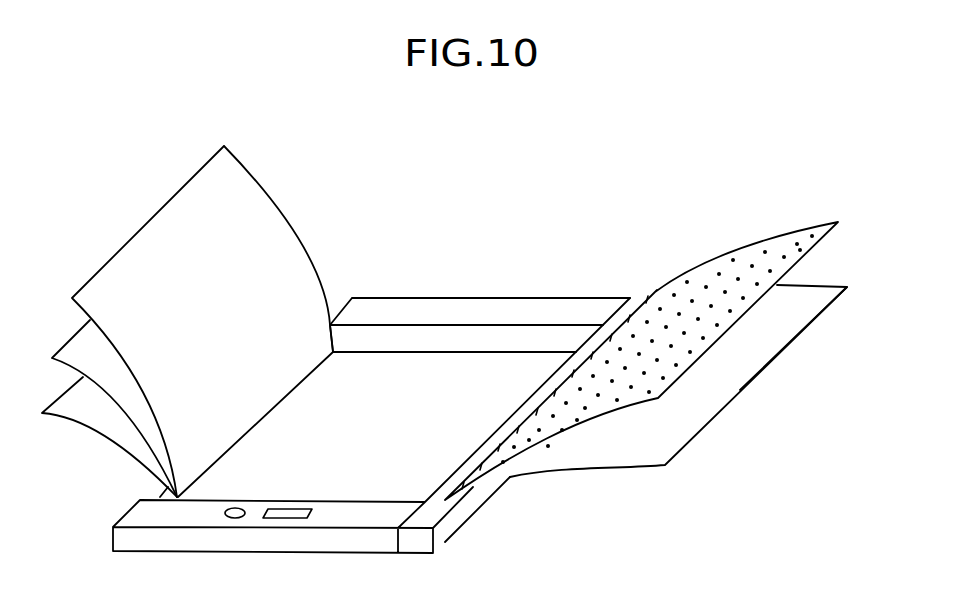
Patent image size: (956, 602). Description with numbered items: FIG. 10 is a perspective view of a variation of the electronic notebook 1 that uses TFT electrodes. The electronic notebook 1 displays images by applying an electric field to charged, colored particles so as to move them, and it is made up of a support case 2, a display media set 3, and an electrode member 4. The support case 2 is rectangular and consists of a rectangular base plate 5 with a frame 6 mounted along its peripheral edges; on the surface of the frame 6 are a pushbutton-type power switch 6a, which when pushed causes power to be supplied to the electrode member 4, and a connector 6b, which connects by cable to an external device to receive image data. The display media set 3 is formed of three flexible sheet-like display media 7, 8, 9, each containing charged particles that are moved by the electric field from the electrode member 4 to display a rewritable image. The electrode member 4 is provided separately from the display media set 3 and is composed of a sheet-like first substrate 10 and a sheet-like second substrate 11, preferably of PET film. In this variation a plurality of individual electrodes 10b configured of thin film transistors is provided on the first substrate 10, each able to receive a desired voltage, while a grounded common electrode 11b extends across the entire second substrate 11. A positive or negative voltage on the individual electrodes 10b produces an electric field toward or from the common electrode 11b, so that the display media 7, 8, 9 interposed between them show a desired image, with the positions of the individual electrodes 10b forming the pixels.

The electronic notebook 1 is at (667, 154).
The support case 2 is at (516, 252).
The display media set 3 is at (75, 232).
The electrode member 4 is at (890, 227).
The base plate 5 is at (418, 367).
The frame 6 is at (492, 305).
The power switch 6a is at (288, 512).
The connector 6b is at (233, 513).
The display medium 7 is at (102, 302).
The display medium 8 is at (72, 348).
The display medium 9 is at (58, 401).
The first substrate 10 is at (827, 238).
The individual electrodes 10b is at (808, 235).
The second substrate 11 is at (847, 286).
The common electrode 11b is at (763, 353).